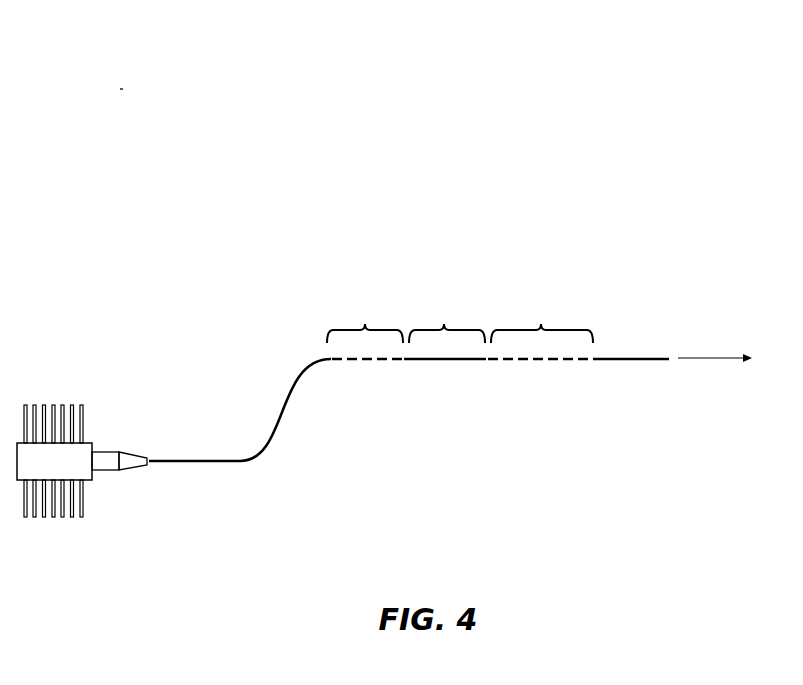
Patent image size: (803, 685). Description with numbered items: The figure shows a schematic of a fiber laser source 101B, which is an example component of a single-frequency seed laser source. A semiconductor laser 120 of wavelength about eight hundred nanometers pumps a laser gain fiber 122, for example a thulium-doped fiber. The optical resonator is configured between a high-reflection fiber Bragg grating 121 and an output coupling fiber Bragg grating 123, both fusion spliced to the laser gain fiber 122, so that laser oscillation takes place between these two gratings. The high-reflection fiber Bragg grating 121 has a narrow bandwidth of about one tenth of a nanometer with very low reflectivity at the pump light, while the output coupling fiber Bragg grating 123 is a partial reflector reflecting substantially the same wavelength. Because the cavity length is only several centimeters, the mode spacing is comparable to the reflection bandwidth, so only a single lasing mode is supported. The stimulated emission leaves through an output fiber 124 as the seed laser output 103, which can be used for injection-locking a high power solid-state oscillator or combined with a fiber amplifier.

The fiber laser source 101B is at (121, 86).
The semiconductor laser 120 is at (66, 382).
The high-reflection fiber Bragg grating 121 is at (363, 312).
The laser gain fiber 122 is at (442, 312).
The output coupling fiber Bragg grating 123 is at (541, 312).
The output fiber 124 is at (623, 349).
The seed laser output 103 is at (708, 349).